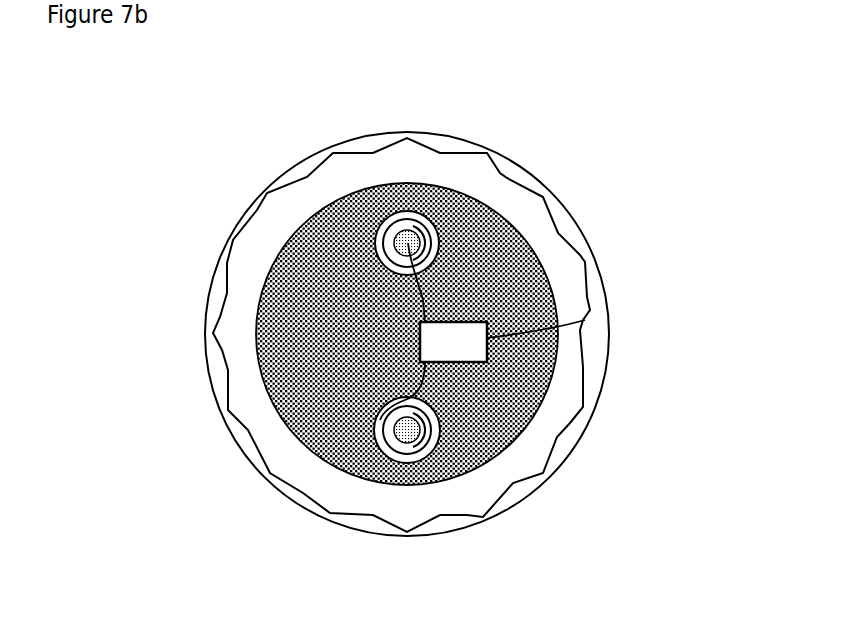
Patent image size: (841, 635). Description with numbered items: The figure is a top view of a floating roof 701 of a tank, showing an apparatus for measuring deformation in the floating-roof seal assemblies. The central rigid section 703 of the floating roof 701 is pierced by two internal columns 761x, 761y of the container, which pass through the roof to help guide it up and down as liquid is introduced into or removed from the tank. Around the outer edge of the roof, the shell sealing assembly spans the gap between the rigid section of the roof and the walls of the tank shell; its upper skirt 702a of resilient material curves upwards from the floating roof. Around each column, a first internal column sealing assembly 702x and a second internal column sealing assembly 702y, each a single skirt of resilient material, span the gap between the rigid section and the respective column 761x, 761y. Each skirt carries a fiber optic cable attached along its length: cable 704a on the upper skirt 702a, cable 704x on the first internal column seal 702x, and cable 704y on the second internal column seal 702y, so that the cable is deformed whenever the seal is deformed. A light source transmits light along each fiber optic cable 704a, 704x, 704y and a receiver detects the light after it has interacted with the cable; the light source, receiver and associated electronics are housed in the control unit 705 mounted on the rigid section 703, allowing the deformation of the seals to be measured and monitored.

The floating roof 701 is at (180, 518).
The upper skirt 702a is at (240, 278).
The first internal column sealing assembly 702x is at (408, 243).
The second internal column sealing assembly 702y is at (413, 407).
The rigid section 703 is at (500, 272).
The fiber optic cable 704a is at (212, 348).
The fiber optic cable 704x is at (373, 237).
The fiber optic cable 704y is at (387, 445).
The control unit 705 is at (463, 352).
The internal column 761x is at (405, 235).
The internal column 761y is at (407, 430).